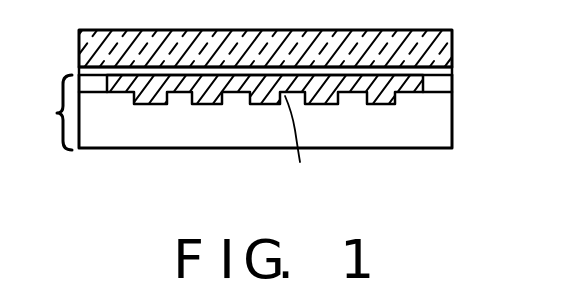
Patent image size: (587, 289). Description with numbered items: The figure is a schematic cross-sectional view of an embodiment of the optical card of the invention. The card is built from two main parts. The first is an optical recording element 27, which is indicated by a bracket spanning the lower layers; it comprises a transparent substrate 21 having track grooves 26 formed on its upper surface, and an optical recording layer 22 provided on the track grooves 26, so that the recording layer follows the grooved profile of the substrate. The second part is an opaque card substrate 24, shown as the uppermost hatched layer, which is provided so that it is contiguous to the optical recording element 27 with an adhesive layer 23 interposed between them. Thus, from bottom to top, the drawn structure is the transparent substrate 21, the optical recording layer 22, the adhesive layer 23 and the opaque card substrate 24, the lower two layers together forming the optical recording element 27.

The transparent substrate 21 is at (452, 126).
The optical recording layer 22 is at (414, 87).
The adhesive layer 23 is at (452, 73).
The opaque card substrate 24 is at (452, 48).
The track grooves 26 is at (302, 146).
The optical recording element 27 is at (44, 112).